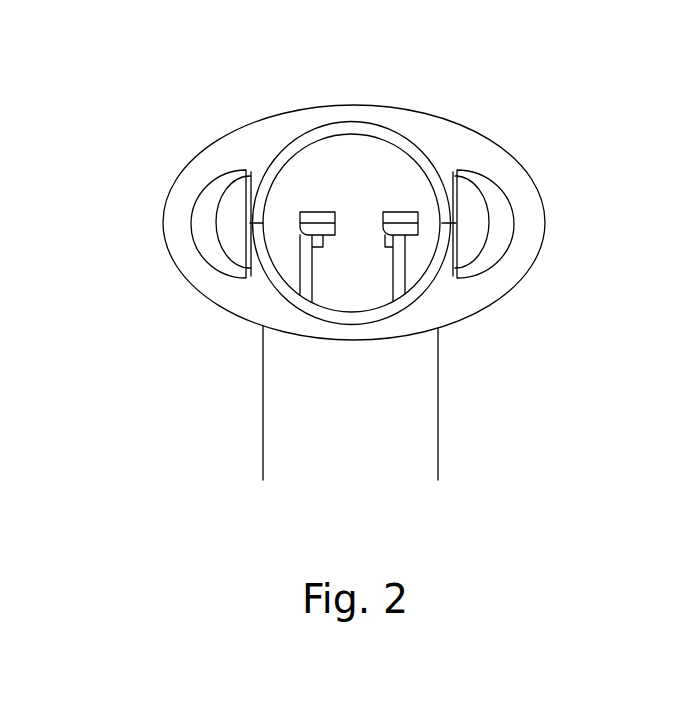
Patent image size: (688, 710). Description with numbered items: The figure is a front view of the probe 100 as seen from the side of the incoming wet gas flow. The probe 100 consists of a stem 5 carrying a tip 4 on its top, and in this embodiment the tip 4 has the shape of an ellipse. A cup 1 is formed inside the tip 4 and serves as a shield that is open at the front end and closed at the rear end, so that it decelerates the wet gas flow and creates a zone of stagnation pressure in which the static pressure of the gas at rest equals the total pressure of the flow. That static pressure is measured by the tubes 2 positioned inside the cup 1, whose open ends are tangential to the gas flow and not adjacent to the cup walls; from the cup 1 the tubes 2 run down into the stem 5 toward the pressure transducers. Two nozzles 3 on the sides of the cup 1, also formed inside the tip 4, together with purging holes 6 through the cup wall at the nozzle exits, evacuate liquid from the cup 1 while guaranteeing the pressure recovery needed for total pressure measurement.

The probe 100 is at (198, 112).
The cup 1 is at (425, 137).
The tubes 2 is at (318, 208).
The nozzles 3 is at (474, 217).
The tip 4 is at (159, 232).
The stem 5 is at (384, 388).
The purging holes 6 is at (260, 224).